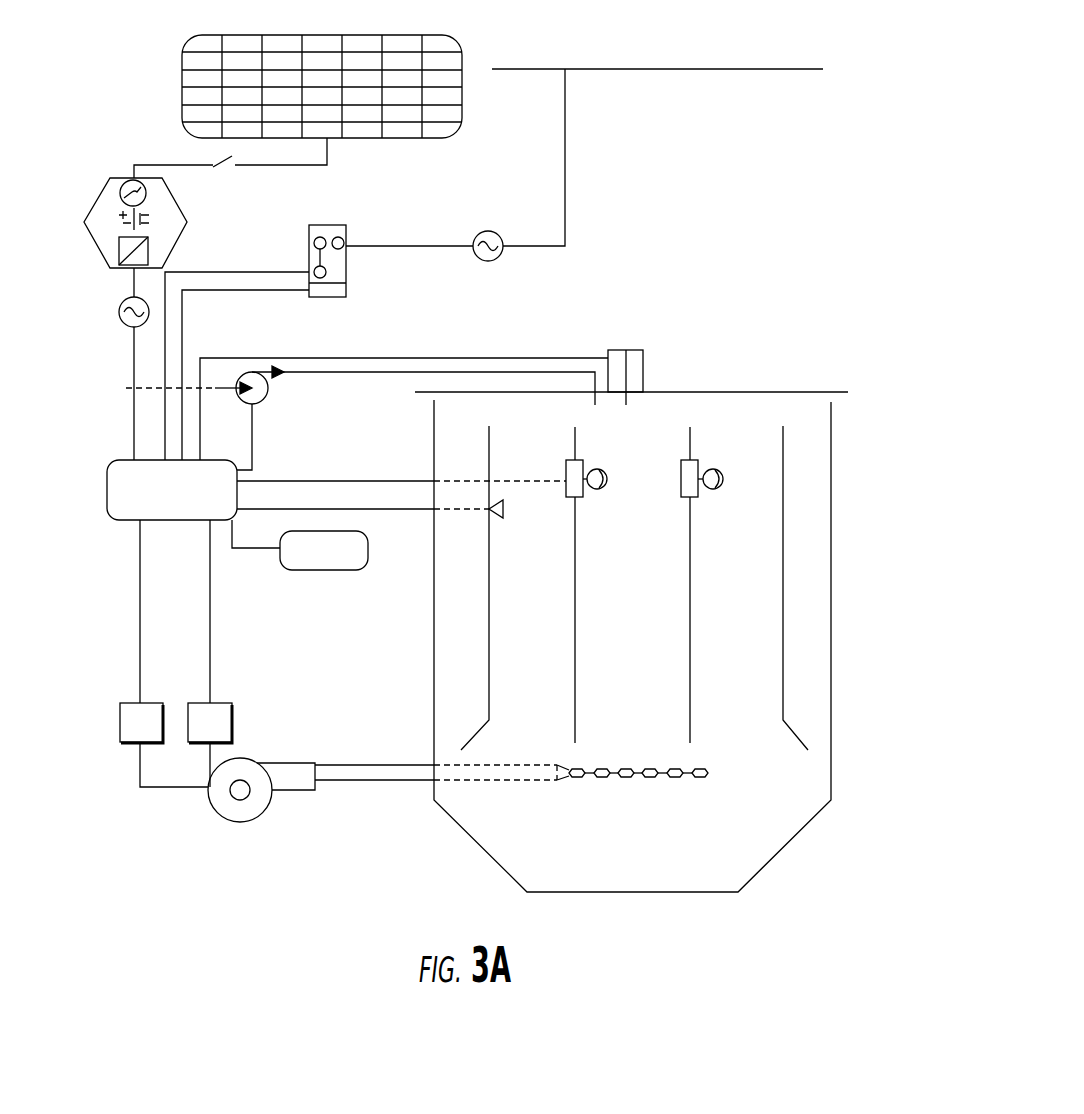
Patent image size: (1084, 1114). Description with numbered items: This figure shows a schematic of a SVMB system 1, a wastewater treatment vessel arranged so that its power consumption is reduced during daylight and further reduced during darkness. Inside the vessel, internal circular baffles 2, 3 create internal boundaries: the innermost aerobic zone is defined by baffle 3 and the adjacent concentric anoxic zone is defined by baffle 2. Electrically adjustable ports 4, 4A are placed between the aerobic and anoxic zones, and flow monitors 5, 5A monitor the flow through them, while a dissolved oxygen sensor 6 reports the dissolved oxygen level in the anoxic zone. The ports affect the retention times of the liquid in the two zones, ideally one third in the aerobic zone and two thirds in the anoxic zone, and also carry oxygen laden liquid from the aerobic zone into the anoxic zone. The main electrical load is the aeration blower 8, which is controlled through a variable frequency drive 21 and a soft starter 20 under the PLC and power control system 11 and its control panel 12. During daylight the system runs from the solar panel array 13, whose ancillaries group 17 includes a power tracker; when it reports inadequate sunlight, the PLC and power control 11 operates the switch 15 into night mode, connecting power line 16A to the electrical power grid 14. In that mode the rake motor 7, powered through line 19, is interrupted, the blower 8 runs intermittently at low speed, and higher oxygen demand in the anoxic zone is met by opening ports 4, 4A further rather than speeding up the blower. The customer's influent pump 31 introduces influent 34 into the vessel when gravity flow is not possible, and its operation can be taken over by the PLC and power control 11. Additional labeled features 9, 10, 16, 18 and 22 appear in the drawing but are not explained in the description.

The SVMB system 1 is at (832, 470).
The internal circular baffle 2 is at (489, 442).
The internal circular baffle 3 is at (577, 440).
The electrically adjustable port 4 is at (584, 460).
The electrically adjustable port 4A is at (699, 460).
The flow monitor 5 is at (605, 487).
The flow monitor 5A is at (722, 487).
The dissolved oxygen sensor 6 is at (503, 514).
The rake motor 7 is at (650, 365).
The aeration blower 8 is at (268, 800).
The air pipe 9 is at (340, 782).
The diffuser 10 is at (590, 778).
The PLC and power control system 11 is at (120, 460).
The control panel 12 is at (304, 572).
The solar panel array 13 is at (182, 78).
The electrical power grid 14 is at (713, 69).
The switch 15 is at (347, 275).
The power line 16 is at (184, 316).
The power line 16A is at (208, 272).
The solar panel array ancillaries group 17 is at (97, 198).
The day switch 18 is at (212, 170).
The line 19 is at (312, 358).
The soft starter 20 is at (195, 703).
The variable frequency drive 21 is at (122, 703).
The tank top 22 is at (728, 392).
The influent pump 31 is at (263, 400).
The influent 34 is at (126, 388).